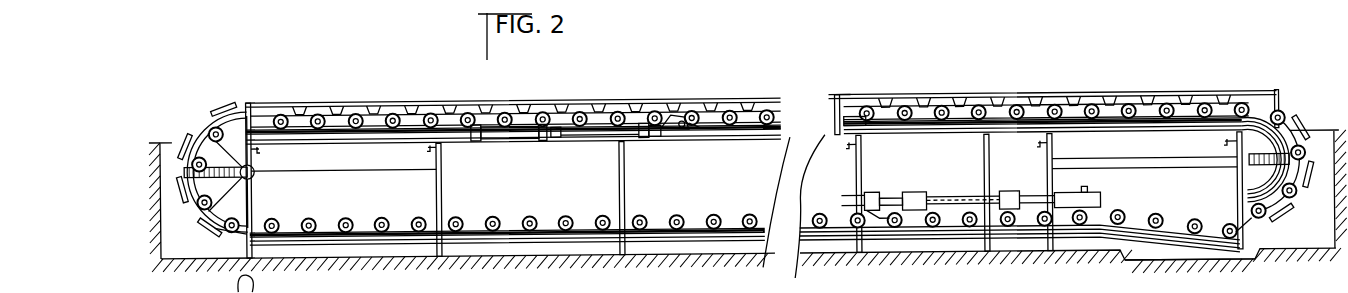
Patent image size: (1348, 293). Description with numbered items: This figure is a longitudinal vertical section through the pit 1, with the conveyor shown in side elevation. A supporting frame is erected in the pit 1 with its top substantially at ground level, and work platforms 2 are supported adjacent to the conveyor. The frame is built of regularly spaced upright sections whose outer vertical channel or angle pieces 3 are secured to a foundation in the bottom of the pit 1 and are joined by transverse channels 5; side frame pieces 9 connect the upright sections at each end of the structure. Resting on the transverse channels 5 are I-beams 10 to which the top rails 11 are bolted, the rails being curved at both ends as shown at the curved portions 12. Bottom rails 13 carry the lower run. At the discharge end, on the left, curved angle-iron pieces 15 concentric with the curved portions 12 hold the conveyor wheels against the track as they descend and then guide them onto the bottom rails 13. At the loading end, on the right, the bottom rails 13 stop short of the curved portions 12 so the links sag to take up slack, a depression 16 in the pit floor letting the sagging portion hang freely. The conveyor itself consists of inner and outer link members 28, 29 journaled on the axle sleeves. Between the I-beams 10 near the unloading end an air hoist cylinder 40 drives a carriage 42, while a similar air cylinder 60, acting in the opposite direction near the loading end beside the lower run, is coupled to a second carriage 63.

The pit 1 is at (176, 144).
The work platforms 2 is at (860, 104).
The outer vertical channel or angle pieces 3 is at (250, 215).
The transverse channels 5 is at (744, 146).
The side frame pieces 9 is at (360, 176).
The I-beams 10 is at (370, 138).
The top rails 11 is at (1110, 115).
The curved portions of the top rails 12 is at (222, 213).
The bottom rails 13 is at (693, 228).
The curved angle-iron pieces 15 is at (200, 211).
The depression 16 is at (1162, 266).
The inner link members 28 is at (524, 108).
The outer link members 29 is at (569, 109).
The cylinder 40 is at (521, 138).
The carriage 42 is at (690, 138).
The air cylinder 60 is at (1071, 208).
The carriage 63 is at (894, 210).